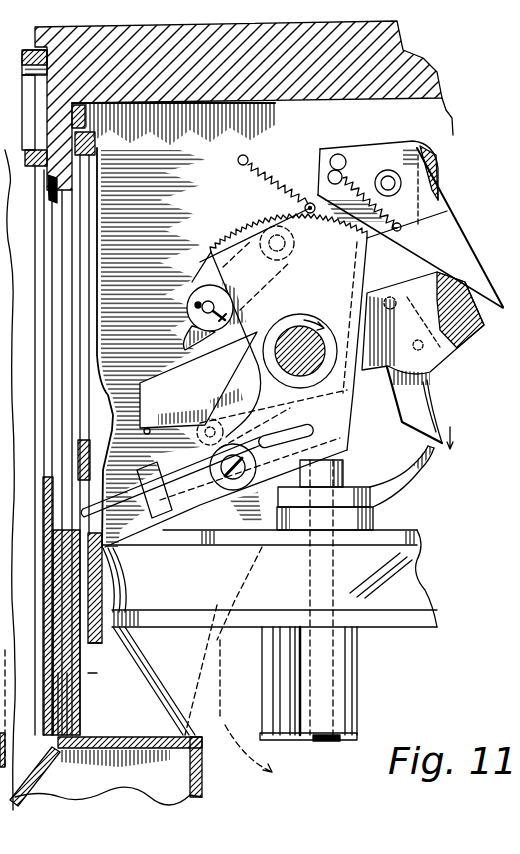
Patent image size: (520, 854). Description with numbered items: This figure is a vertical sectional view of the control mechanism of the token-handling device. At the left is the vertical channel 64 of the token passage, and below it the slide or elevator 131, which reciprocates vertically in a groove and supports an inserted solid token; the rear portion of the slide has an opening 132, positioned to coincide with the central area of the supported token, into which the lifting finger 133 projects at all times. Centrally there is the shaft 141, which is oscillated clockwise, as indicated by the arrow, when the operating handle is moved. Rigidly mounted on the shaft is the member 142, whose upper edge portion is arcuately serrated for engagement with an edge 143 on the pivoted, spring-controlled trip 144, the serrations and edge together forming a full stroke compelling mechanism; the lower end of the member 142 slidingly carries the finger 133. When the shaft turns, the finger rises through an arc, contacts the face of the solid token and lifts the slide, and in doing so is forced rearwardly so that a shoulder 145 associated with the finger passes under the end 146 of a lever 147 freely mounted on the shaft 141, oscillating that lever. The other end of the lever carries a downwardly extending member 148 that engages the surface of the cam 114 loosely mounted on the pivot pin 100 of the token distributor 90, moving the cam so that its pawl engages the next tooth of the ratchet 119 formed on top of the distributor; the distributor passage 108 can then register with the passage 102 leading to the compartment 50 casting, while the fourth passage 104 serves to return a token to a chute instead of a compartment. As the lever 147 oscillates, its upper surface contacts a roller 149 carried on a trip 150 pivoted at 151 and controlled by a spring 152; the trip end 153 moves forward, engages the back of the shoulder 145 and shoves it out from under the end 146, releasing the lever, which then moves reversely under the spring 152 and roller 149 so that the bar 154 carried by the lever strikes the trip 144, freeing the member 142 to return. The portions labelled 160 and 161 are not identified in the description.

The compartment 50 is at (190, 788).
The vertical channel 64 is at (63, 413).
The token distributor 90 is at (422, 577).
The pivot pin 100 is at (343, 470).
The cylindrical passage 102 is at (200, 665).
The fourth passage 104 is at (200, 683).
The distributor passage 108 is at (237, 593).
The cam 114 is at (407, 483).
The ratchet 119 is at (370, 513).
The slide or elevator 131 is at (67, 558).
The opening 132 is at (82, 497).
The lifting finger 133 is at (117, 500).
The shaft 141 is at (282, 360).
The member 142 is at (333, 292).
The edge 143 is at (400, 245).
The trip 144 is at (452, 230).
The shoulder 145 is at (173, 457).
The lever end 146 is at (155, 412).
The lever 147 is at (187, 372).
The downwardly extending member 148 is at (425, 425).
The roller 149 is at (193, 300).
The trip 150 is at (220, 278).
The pivot 151 is at (291, 255).
The spring 152 is at (275, 173).
The trip end 153 is at (186, 340).
The bar 154 is at (440, 297).
The plate 160 is at (53, 100).
The plate 161 is at (37, 90).